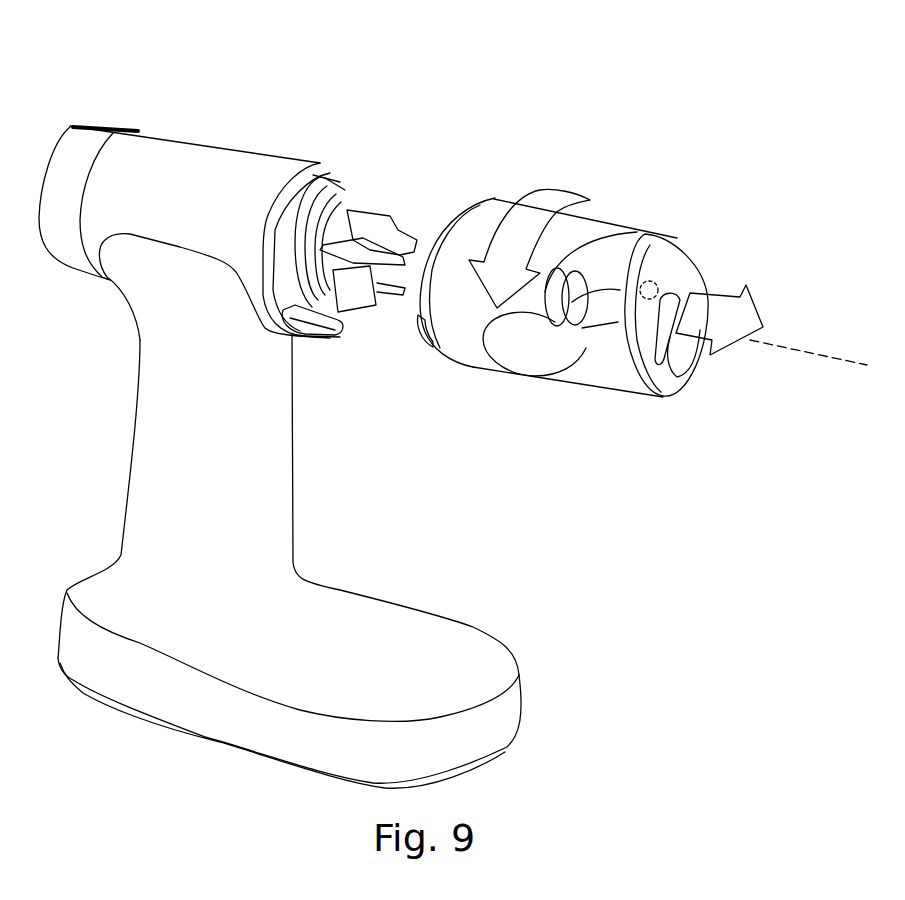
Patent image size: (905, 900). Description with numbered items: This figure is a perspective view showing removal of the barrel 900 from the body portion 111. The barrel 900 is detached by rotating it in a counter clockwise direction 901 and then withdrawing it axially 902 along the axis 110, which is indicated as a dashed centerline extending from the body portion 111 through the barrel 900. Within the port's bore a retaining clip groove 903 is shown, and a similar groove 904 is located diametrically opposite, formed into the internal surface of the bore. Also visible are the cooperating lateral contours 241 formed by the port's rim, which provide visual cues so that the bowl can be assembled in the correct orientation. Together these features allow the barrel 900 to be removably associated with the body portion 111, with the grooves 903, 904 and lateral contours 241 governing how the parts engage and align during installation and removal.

The body portion 111 is at (173, 160).
The barrel 900 is at (630, 230).
The counter clockwise direction 901 is at (527, 213).
The axial withdrawal direction 902 is at (713, 310).
The retaining clip groove 903 is at (558, 284).
The lateral contours 241 is at (568, 276).
The groove 904 is at (643, 303).
The axis 110 is at (807, 353).